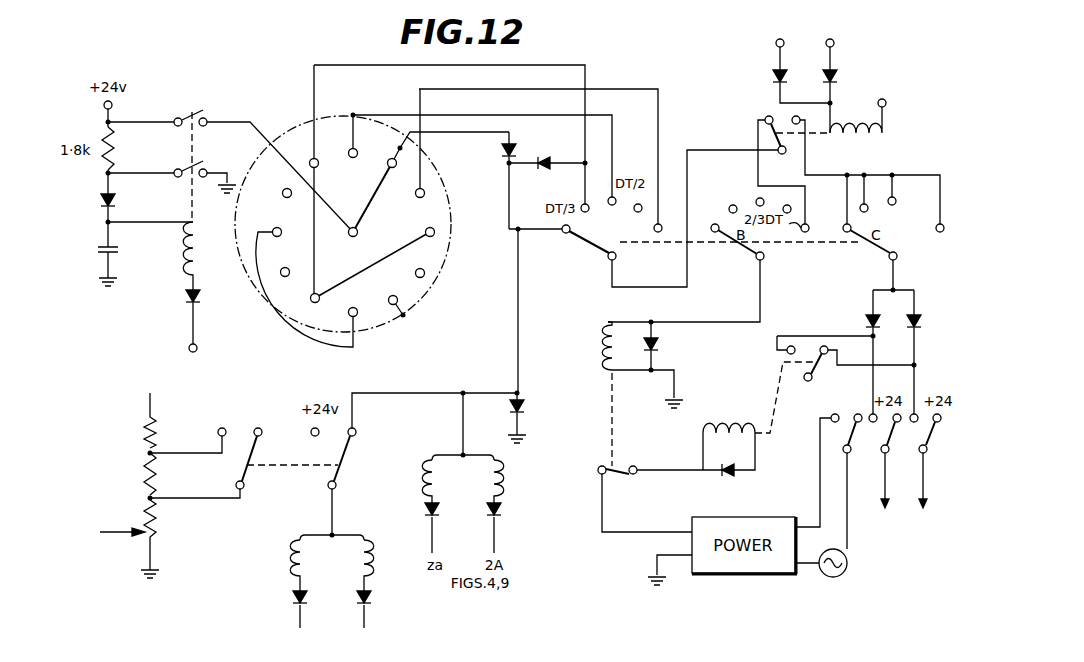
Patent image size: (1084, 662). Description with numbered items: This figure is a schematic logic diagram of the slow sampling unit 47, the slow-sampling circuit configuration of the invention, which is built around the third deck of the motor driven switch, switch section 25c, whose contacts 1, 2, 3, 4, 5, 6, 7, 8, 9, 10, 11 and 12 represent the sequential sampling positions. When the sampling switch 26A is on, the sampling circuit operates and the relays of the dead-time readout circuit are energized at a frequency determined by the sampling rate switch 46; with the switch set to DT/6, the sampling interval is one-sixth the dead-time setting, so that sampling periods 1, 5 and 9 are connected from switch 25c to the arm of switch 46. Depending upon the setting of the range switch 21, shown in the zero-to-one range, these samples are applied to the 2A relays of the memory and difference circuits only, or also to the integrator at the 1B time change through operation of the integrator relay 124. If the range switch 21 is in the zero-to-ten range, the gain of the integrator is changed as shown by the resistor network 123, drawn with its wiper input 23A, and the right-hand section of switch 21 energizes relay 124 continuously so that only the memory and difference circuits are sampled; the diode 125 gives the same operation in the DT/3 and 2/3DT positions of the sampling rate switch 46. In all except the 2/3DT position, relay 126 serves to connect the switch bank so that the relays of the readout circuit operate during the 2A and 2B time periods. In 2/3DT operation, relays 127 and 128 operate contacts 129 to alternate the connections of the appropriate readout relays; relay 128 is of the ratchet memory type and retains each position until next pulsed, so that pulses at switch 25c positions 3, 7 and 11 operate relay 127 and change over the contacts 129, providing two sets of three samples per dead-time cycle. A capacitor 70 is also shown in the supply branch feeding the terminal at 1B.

The capacitor 70 is at (97, 264).
The 1B time change 1B is at (192, 297).
The motor driven switch section 25c is at (343, 206).
The sampling period 1 is at (395, 172).
The switch contact 2 is at (424, 201).
The switch position 3 is at (434, 241).
The switch contact 4 is at (419, 282).
The sampling period 5 is at (398, 296).
The switch contact 6 is at (359, 313).
The switch position 7 is at (320, 305).
The switch contact 8 is at (290, 280).
The sampling period 9 is at (281, 240).
The switch contact 10 is at (295, 203).
The switch position 11 is at (324, 168).
The switch contact 12 is at (364, 148).
The diode 125 is at (548, 155).
The sampling rate switch 46 is at (630, 245).
The slow sampling unit 47 is at (720, 102).
The 2B time period 2B is at (800, 63).
The 2A relay 2A is at (830, 78).
The relay 126 is at (881, 134).
The relay 127 is at (607, 349).
The relay 128 is at (714, 431).
The contacts 129 is at (815, 367).
The resistor network 123 is at (140, 479).
The wiper input 23A is at (122, 531).
The range switch 21 is at (258, 468).
The integrator relay 124 is at (344, 577).
The sampling switch 26A is at (926, 463).